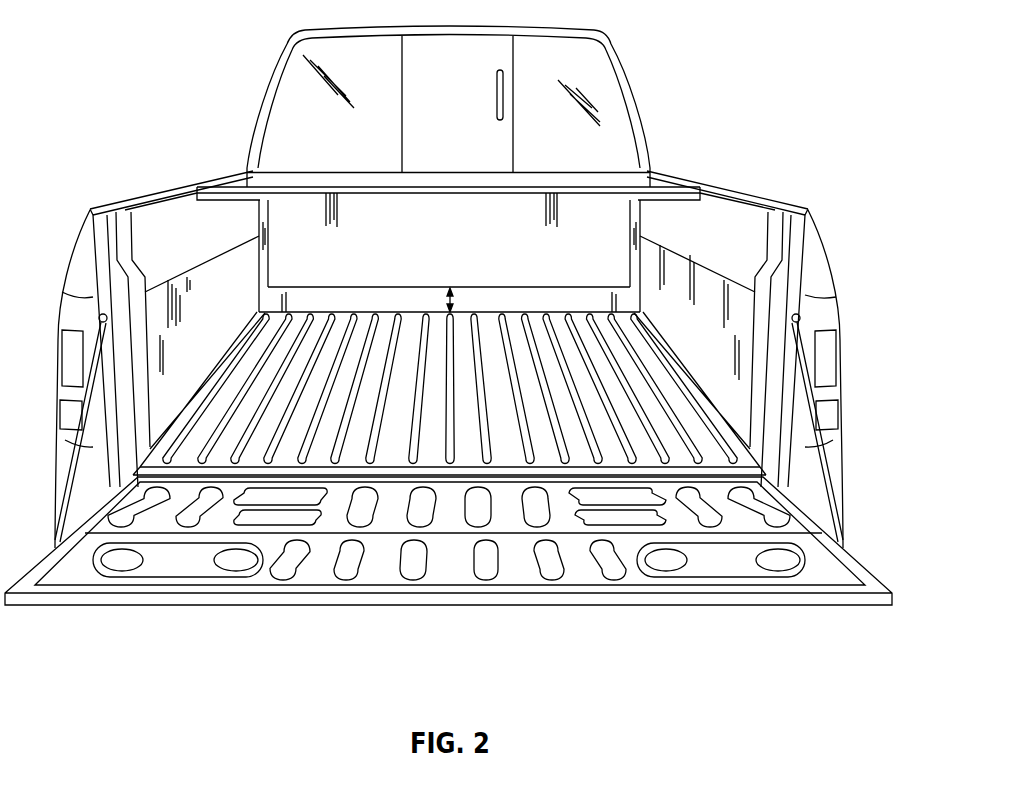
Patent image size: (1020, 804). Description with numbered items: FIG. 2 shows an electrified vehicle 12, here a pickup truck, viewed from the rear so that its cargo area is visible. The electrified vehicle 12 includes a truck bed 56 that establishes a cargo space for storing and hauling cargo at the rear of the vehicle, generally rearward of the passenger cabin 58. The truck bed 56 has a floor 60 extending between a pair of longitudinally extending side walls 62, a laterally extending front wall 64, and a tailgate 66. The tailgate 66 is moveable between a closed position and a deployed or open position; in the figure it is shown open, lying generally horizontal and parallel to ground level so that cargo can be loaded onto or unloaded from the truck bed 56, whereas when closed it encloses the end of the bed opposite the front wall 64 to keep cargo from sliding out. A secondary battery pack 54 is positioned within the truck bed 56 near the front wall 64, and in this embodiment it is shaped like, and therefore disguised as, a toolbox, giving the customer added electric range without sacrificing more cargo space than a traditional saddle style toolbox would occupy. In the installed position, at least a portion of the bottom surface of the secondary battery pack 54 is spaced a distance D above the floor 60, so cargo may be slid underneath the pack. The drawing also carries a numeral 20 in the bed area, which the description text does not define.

The electrified vehicle 12 is at (660, 44).
The passenger cabin 58 is at (608, 107).
The secondary battery pack 54 is at (615, 190).
The side walls 62 is at (137, 225).
The truck bed 56 is at (191, 215).
The front wall 64 is at (622, 305).
The cargo bed 20 is at (573, 288).
The floor 60 is at (500, 412).
The distance D is at (458, 298).
The tailgate 66 is at (578, 578).